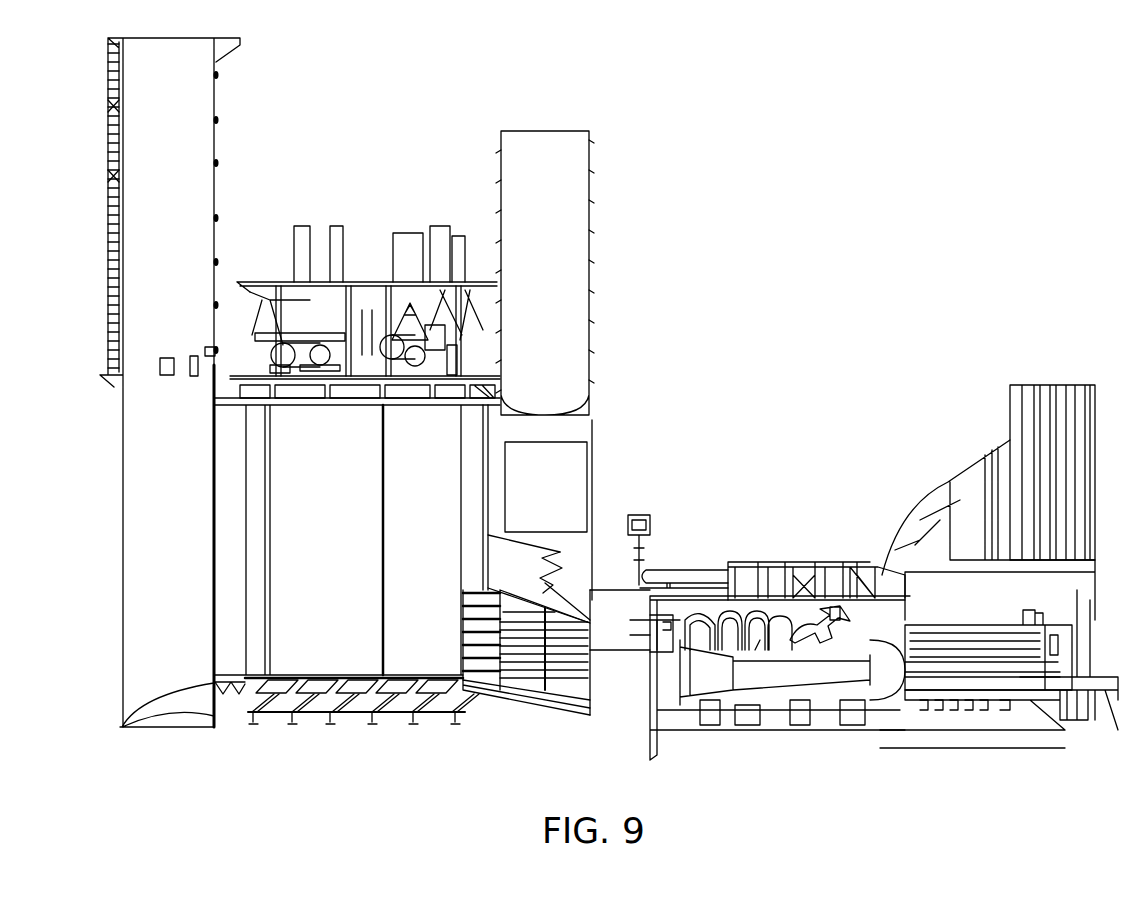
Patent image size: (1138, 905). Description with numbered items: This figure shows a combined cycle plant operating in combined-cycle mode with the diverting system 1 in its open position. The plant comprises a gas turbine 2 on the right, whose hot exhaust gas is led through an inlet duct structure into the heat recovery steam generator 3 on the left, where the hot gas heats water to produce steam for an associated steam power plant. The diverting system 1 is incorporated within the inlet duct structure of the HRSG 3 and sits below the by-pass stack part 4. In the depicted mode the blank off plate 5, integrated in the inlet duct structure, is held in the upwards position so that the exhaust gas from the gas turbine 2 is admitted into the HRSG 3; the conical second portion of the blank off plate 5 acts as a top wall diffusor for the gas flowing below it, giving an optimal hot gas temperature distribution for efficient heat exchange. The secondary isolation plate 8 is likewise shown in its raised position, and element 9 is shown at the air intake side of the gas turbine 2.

The diverting system 1 is at (640, 428).
The gas turbine plant 2 is at (765, 665).
The heat recovery steam generator 3 is at (325, 660).
The by-pass stack part 4 is at (608, 213).
The blank off plate 5 is at (567, 545).
The secondary isolation plate 8 is at (474, 546).
The air intake 9 is at (988, 502).